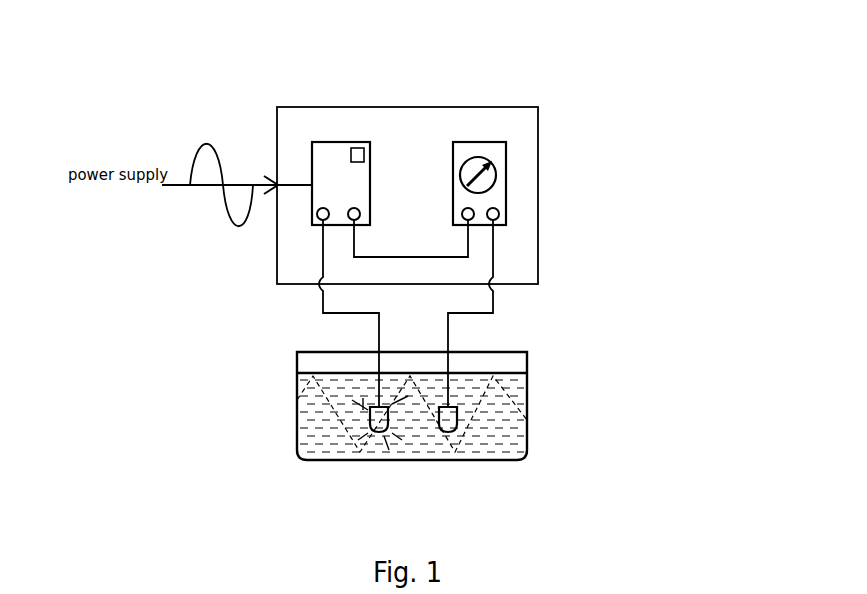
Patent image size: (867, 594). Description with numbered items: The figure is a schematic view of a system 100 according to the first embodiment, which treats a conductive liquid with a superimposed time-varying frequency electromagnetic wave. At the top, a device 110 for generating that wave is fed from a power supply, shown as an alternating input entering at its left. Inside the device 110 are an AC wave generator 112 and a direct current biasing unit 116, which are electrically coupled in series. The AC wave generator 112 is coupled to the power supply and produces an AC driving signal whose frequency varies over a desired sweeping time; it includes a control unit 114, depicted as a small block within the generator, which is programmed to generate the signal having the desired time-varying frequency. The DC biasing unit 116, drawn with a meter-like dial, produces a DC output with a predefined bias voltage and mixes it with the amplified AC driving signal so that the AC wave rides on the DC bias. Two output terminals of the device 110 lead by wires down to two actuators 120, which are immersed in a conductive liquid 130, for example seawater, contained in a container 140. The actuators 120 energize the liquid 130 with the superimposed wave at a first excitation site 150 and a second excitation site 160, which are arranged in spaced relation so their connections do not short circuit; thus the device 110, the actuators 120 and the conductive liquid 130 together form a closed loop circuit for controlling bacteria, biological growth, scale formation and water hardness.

The system 100 is at (588, 307).
The device 110 is at (538, 182).
The AC wave generator 112 is at (340, 157).
The control unit 114 is at (357, 150).
The DC biasing unit 116 is at (473, 152).
The actuators 120 is at (380, 414).
The conductive liquid 130 is at (503, 412).
The container 140 is at (297, 400).
The first excitation site 150 is at (384, 430).
The second excitation site 160 is at (457, 425).